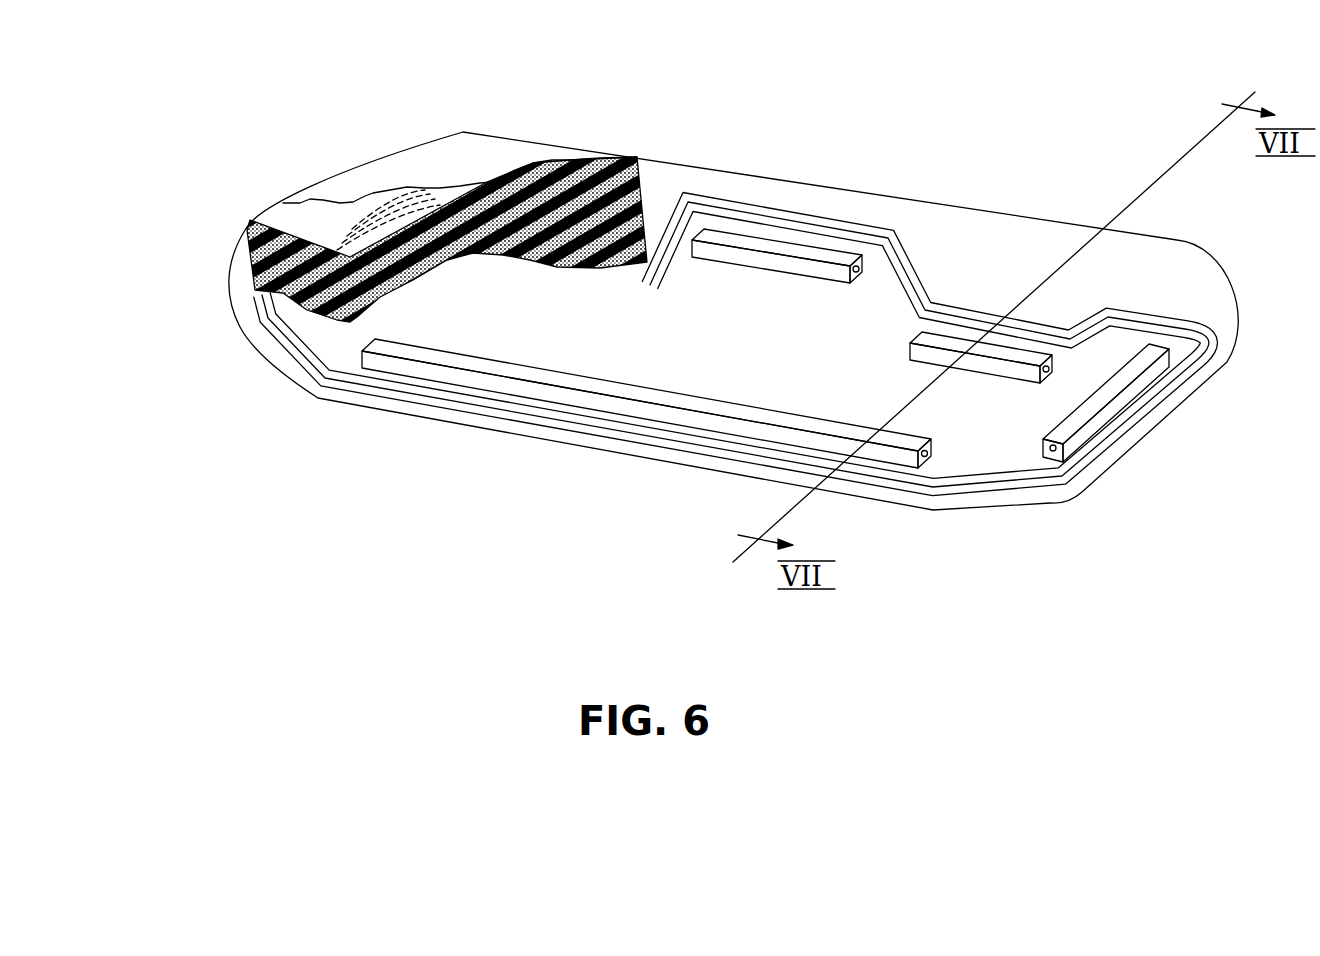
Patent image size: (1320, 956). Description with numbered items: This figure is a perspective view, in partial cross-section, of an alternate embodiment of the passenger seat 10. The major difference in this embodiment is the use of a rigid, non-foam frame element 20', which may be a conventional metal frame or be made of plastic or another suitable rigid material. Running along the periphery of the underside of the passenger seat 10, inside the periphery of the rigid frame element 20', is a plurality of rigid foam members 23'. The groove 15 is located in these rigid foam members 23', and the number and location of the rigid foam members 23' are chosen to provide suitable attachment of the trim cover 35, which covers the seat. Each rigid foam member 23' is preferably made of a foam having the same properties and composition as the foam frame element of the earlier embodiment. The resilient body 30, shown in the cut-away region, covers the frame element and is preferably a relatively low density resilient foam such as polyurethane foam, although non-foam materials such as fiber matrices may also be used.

The passenger seat 10 is at (918, 179).
The groove 15 is at (1050, 367).
The rigid, non-foam frame element 20' is at (724, 344).
The rigid foam members 23' is at (765, 296).
The resilient body 30 is at (248, 229).
The trim cover 35 is at (440, 157).